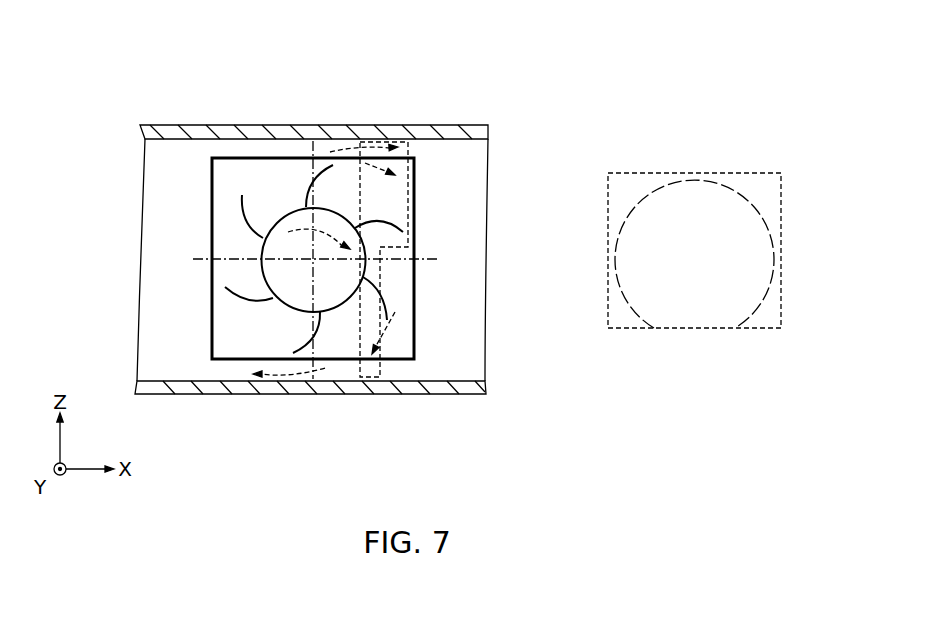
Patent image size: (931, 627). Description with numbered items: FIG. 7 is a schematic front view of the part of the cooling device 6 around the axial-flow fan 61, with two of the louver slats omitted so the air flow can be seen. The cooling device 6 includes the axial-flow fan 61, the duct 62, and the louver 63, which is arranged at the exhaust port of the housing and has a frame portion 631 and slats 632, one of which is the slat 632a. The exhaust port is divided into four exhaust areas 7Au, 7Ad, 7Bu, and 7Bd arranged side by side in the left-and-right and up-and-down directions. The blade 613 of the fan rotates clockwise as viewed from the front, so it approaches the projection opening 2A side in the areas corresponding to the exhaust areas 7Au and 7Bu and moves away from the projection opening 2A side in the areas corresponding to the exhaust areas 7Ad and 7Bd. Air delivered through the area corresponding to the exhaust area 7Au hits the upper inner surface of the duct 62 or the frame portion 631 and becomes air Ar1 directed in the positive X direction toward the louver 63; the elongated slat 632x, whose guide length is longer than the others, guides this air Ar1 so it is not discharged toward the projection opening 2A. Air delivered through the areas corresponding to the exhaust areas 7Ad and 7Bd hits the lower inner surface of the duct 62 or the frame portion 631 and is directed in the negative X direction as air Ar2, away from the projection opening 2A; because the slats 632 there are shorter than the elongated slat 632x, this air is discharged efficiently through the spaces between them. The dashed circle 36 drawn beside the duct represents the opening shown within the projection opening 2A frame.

The cooling device 6 is at (296, 246).
The duct 62 is at (311, 261).
The frame portion 631 is at (311, 261).
The louver 63 is at (233, 130).
The axial-flow fan 61 is at (196, 285).
The blade 613 is at (313, 259).
The exhaust area 7Bu is at (227, 182).
The exhaust area 7Bd is at (227, 330).
The exhaust area 7Au is at (345, 193).
The exhaust area 7Ad is at (403, 335).
The slats 632 is at (377, 310).
The slat 632a is at (372, 398).
The elongated slat 632x is at (407, 168).
The air Ar1 is at (345, 142).
The lower air flow Ar2 is at (290, 395).
The projection opening 2A is at (694, 249).
The fan opening 36 is at (693, 318).